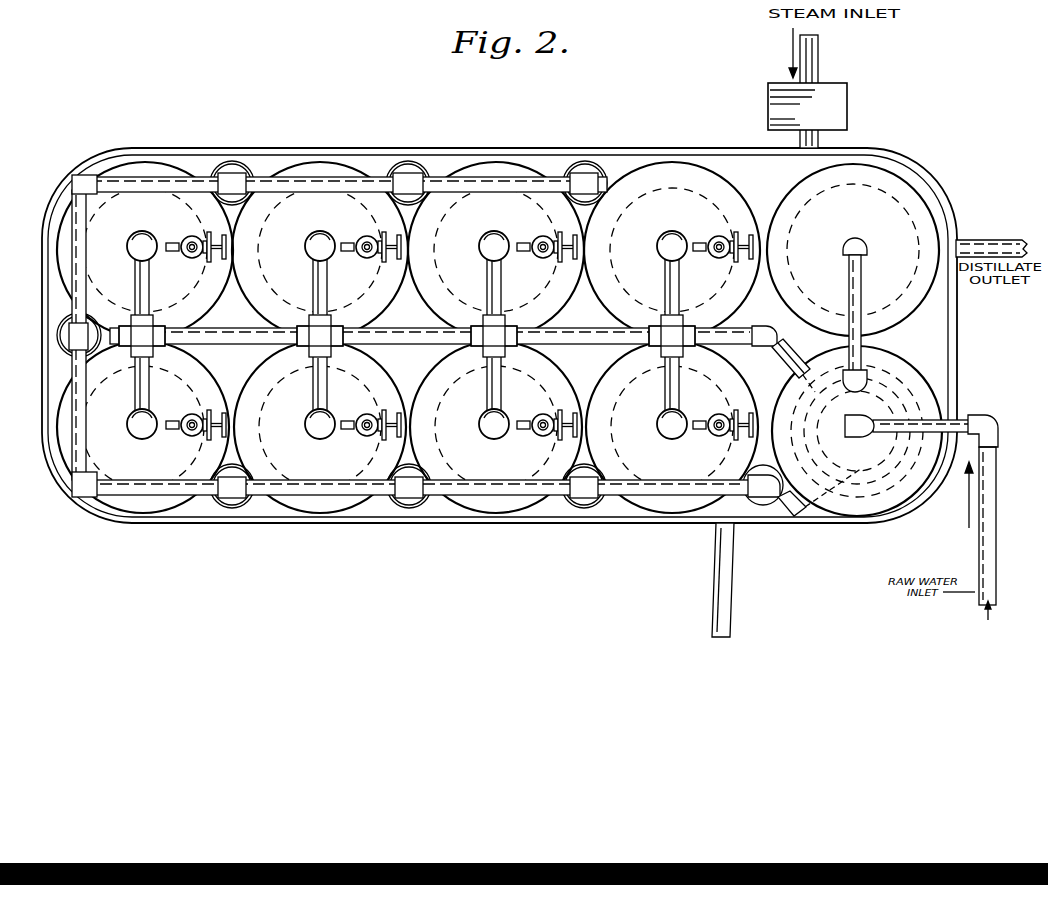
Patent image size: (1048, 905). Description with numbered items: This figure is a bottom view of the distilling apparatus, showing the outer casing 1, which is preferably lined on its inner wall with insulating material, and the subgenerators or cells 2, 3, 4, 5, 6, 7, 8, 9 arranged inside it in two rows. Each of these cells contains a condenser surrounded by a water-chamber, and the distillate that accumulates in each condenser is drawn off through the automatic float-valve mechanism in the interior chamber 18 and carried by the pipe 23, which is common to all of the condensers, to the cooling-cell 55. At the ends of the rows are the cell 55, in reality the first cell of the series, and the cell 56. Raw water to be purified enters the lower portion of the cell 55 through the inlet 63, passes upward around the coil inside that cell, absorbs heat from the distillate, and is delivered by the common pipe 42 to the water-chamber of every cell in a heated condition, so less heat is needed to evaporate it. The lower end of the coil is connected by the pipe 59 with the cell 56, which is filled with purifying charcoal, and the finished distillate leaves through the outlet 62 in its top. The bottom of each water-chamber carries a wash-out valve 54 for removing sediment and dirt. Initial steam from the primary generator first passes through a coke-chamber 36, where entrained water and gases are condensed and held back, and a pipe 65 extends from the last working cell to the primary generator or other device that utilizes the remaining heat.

The outer casing 1 is at (42, 330).
The subgenerator or cell 2 is at (672, 250).
The subgenerator or cell 3 is at (496, 250).
The subgenerator or cell 4 is at (320, 250).
The subgenerator or cell 5 is at (145, 250).
The subgenerator or cell 6 is at (143, 427).
The subgenerator or cell 7 is at (320, 427).
The subgenerator or cell 8 is at (496, 427).
The subgenerator or cell 9 is at (672, 427).
The interior chamber 18 is at (232, 163).
The pipe 23 is at (553, 167).
The coke-chamber 36 is at (790, 88).
The pipe 42 is at (400, 330).
The wash-out valve 54 is at (205, 253).
The cell 55 is at (913, 390).
The cell 56 is at (932, 230).
The pipe 59 is at (860, 294).
The outlet 62 is at (991, 239).
The inlet 63 is at (847, 418).
The pipe 65 is at (735, 580).